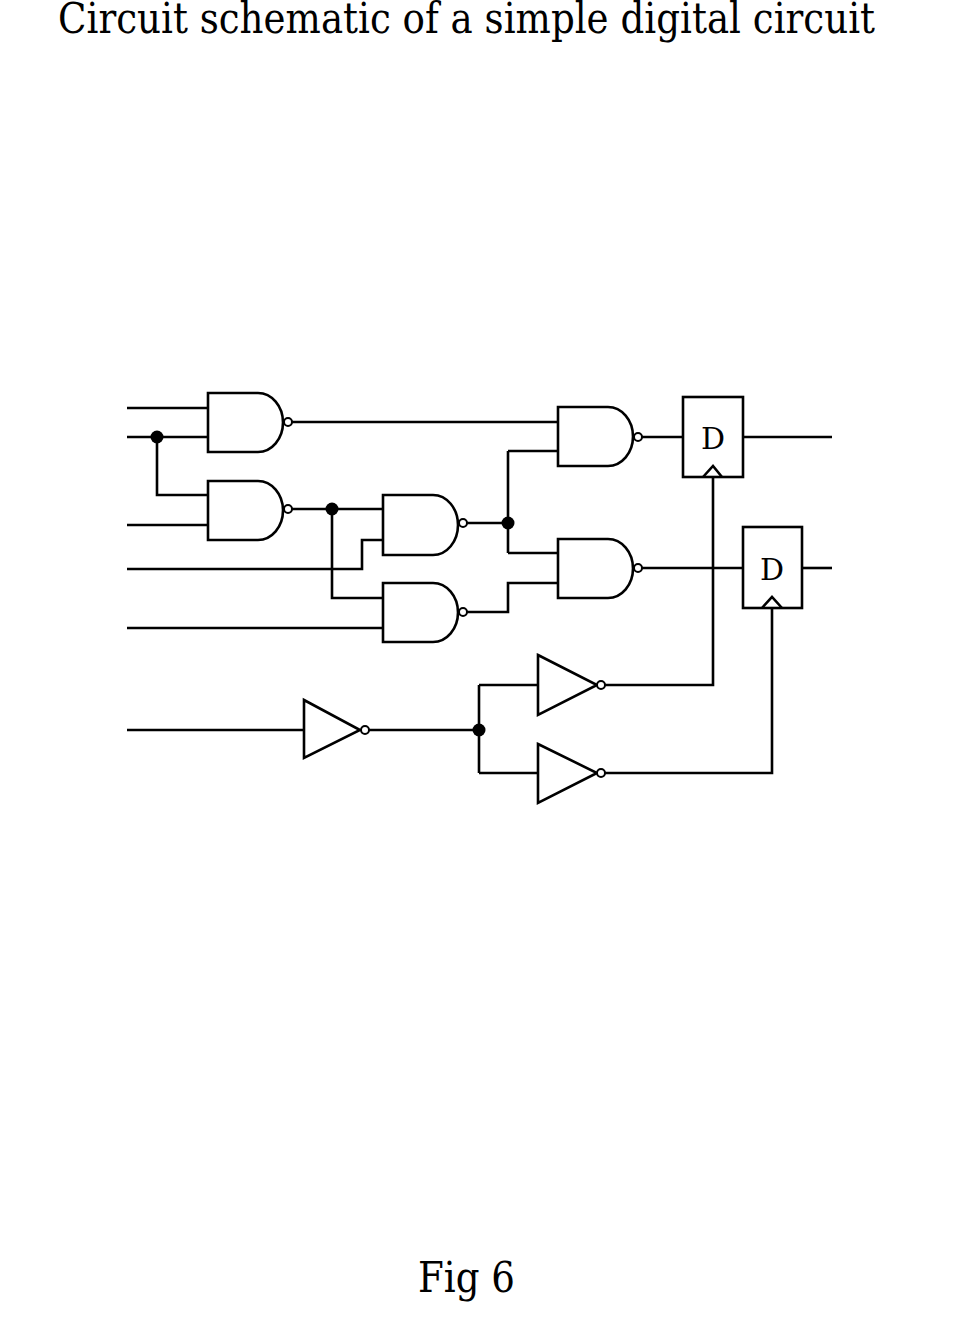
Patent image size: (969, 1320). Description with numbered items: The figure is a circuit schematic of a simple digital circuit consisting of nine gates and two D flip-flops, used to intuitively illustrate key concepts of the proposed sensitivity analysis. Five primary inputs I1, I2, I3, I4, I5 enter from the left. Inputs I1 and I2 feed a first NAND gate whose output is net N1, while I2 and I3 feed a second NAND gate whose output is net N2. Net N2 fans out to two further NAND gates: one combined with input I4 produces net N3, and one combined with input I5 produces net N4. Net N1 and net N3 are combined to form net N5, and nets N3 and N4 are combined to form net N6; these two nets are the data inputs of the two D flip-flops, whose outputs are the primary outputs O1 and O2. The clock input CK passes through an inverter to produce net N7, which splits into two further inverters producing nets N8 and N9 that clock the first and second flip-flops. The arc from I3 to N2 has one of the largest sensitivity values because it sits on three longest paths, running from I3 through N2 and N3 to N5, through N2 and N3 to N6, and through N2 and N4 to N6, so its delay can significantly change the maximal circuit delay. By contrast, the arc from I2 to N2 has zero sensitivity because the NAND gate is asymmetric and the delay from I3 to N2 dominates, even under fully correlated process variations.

The primary input I1 is at (147, 402).
The primary input I2 is at (147, 463).
The primary input I3 is at (147, 528).
The primary input I4 is at (235, 565).
The primary input I5 is at (235, 633).
The net N1 is at (425, 403).
The net N2 is at (337, 534).
The net N3 is at (512, 502).
The net N4 is at (512, 610).
The net N5 is at (658, 415).
The net N6 is at (692, 550).
The net N7 is at (453, 727).
The net N8 is at (659, 583).
The net N9 is at (688, 693).
The primary output O1 is at (814, 438).
The primary output O2 is at (843, 570).
The clock input CK is at (175, 731).